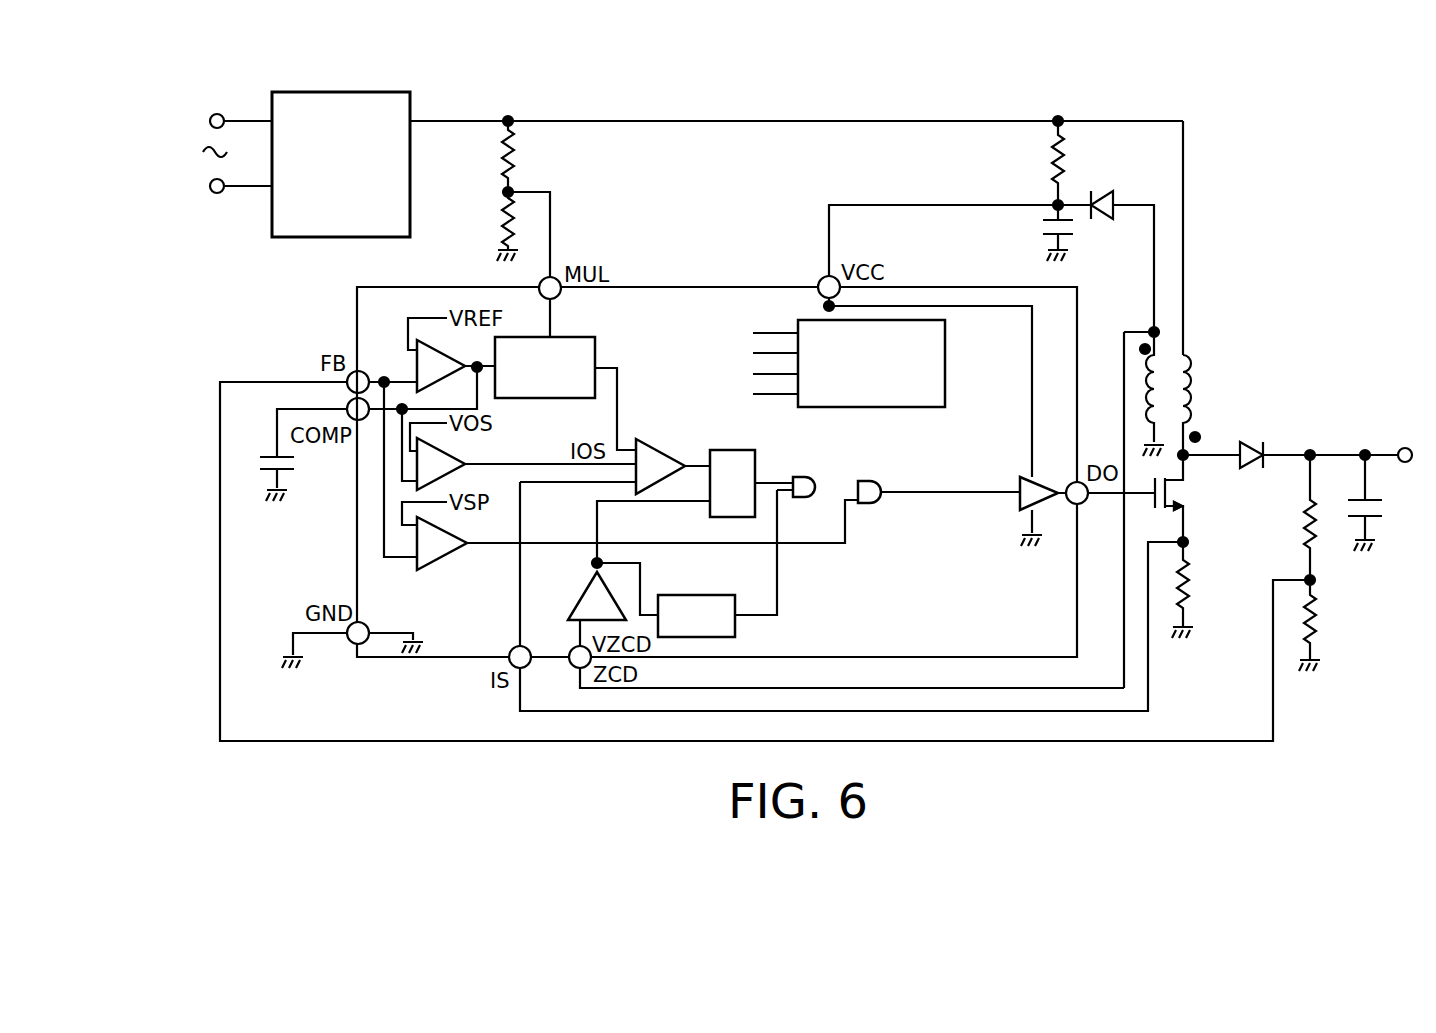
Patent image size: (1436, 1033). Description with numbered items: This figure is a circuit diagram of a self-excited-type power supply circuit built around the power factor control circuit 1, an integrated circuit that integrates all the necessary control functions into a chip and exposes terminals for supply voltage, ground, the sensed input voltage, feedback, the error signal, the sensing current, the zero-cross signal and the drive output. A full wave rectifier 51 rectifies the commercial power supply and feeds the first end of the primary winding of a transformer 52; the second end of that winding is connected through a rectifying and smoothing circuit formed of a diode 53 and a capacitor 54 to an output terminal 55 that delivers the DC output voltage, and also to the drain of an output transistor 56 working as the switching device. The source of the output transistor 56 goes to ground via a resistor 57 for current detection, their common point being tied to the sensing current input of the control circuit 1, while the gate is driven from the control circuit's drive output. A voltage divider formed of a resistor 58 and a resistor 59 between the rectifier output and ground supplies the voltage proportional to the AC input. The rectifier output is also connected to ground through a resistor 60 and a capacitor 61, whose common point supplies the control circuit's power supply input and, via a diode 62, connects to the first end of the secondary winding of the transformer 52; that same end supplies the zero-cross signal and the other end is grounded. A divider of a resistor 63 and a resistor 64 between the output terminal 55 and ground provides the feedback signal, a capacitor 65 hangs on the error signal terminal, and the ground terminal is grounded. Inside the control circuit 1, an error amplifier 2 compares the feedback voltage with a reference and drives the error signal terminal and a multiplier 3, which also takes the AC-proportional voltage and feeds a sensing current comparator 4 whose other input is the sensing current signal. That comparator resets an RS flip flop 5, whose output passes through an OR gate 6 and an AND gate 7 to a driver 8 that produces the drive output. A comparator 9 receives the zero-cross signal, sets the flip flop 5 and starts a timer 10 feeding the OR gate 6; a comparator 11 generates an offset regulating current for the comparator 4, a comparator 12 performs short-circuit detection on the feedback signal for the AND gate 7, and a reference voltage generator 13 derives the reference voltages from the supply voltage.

The power factor control circuit 1 is at (357, 308).
The error amplifier 2 is at (415, 362).
The multiplier 3 is at (565, 337).
The sensing current comparator 4 is at (655, 448).
The RS flip flop 5 is at (720, 450).
The OR gate 6 is at (803, 477).
The AND gate 7 is at (861, 483).
The driver 8 is at (1035, 477).
The comparator 9 is at (585, 596).
The timer 10 is at (698, 595).
The comparator 11 is at (445, 452).
The comparator 12 is at (438, 560).
The reference voltage generator 13 is at (947, 360).
The full wave rectifier 51 is at (272, 228).
The transformer 52 is at (1193, 375).
The diode 53 is at (1250, 442).
The capacitor 54 is at (1380, 507).
The output terminal 55 is at (1404, 447).
The output transistor 56 is at (1175, 494).
The resistor 57 is at (1195, 577).
The resistor 58 is at (518, 162).
The resistor 59 is at (500, 224).
The resistor 60 is at (1046, 165).
The capacitor 61 is at (1040, 233).
The diode 62 is at (1103, 190).
The resistor 63 is at (1317, 555).
The resistor 64 is at (1320, 630).
The capacitor 65 is at (262, 462).